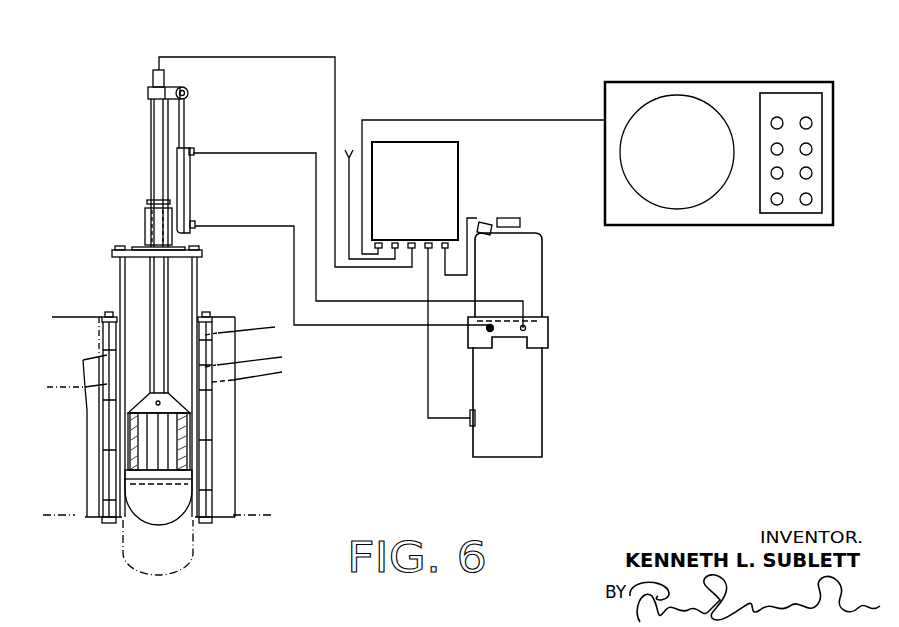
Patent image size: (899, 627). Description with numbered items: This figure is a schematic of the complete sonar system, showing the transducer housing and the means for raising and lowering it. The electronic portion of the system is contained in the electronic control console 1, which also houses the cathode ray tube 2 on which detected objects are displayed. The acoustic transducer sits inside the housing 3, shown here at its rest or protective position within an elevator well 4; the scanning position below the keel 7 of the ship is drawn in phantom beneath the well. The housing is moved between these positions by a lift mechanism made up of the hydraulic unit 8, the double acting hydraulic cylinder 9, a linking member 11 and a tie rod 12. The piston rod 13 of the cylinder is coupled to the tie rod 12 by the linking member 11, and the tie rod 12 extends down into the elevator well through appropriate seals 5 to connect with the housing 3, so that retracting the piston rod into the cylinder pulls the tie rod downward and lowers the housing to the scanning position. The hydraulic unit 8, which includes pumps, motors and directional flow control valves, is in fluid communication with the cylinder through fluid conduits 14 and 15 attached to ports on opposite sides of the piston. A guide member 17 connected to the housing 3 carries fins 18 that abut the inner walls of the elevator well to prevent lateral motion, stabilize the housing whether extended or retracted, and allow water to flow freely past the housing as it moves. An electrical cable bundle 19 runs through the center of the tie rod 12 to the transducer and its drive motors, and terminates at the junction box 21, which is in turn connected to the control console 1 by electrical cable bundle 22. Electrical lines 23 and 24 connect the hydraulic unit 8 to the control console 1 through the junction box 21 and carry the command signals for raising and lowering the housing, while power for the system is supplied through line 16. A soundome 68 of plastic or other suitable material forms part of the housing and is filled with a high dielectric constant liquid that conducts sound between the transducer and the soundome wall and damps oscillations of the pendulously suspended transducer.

The electronic control console 1 is at (833, 122).
The cathode ray tube 2 is at (661, 118).
The housing 3 is at (185, 477).
The elevator well 4 is at (207, 397).
The seals 5 is at (145, 222).
The keel 7 is at (63, 518).
The hydraulic unit 8 is at (533, 405).
The double acting hydraulic cylinder 9 is at (190, 187).
The linking member 11 is at (178, 87).
The tie rod 12 is at (151, 118).
The piston rod 13 is at (185, 127).
The fluid conduit 14 is at (341, 325).
The fluid conduit 15 is at (367, 301).
The line 16 is at (356, 150).
The guide member 17 is at (180, 447).
The fins 18 is at (135, 440).
The electrical cable bundle 19 is at (262, 55).
The junction box 21 is at (447, 192).
The electrical cable bundle 22 is at (455, 120).
The electrical line 23 is at (428, 376).
The electrical line 24 is at (448, 272).
The soundome 68 is at (170, 510).